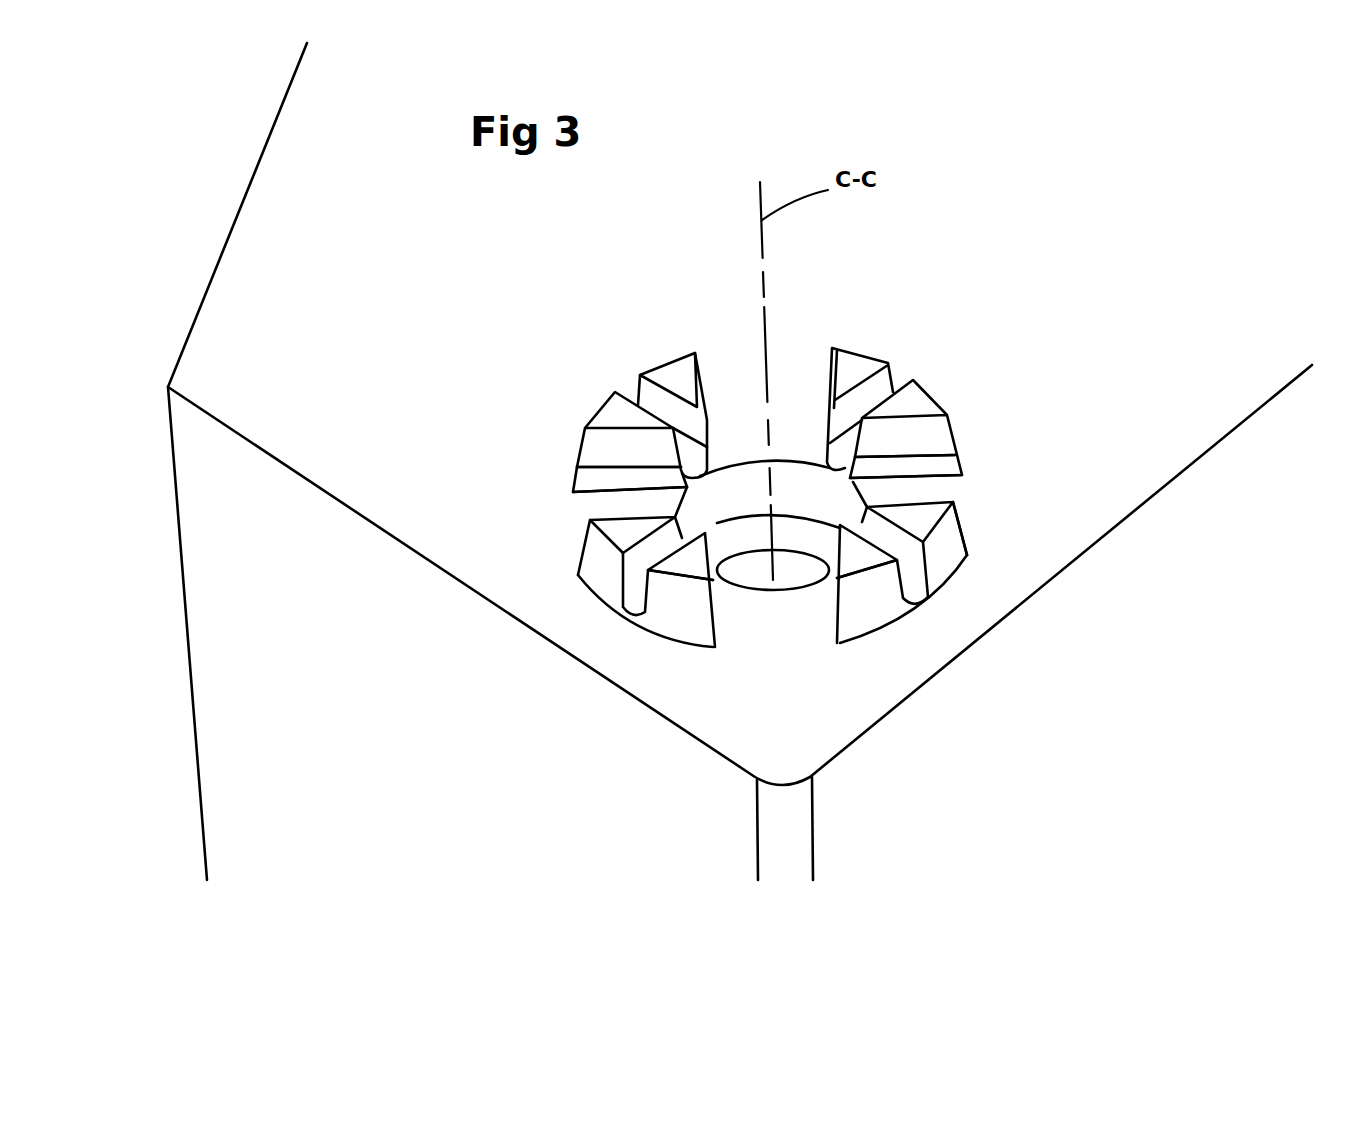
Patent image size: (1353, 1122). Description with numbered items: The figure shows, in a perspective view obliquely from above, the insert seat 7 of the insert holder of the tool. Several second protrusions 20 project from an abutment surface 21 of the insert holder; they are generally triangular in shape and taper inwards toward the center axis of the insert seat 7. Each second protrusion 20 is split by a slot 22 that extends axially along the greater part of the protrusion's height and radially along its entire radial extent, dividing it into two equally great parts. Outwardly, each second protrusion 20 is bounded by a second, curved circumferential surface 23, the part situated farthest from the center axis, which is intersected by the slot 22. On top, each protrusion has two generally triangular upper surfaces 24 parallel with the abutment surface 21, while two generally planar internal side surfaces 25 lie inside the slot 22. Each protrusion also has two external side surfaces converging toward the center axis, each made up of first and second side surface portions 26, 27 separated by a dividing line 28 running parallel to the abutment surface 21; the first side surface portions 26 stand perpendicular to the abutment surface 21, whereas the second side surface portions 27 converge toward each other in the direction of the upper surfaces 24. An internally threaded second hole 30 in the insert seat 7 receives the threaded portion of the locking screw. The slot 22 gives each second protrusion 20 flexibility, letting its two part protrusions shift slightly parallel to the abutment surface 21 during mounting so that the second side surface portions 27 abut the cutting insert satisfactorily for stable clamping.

The insert seat 7 is at (518, 495).
The second protrusions 20 is at (957, 503).
The abutment surface 21 is at (723, 702).
The slot 22 is at (637, 603).
The second curved circumferential surface 23 is at (603, 578).
The upper surfaces 24 is at (692, 565).
The internal side surfaces 25 is at (947, 562).
The first side surface portions 26 is at (597, 483).
The second side surface portions 27 is at (597, 452).
The dividing line 28 is at (628, 467).
The second hole 30 is at (810, 537).